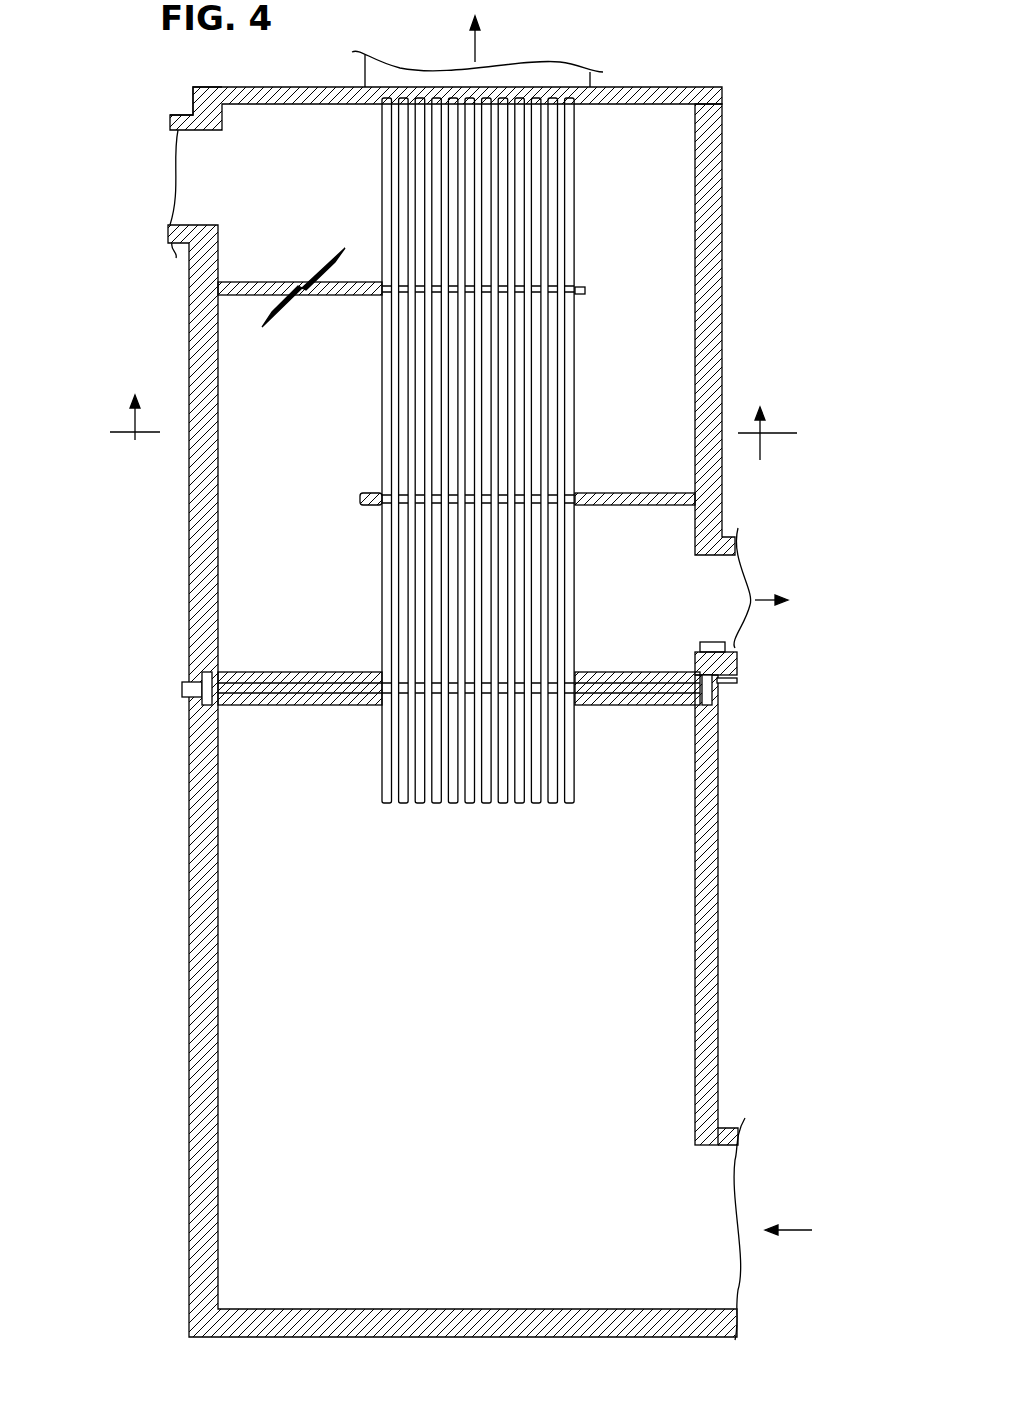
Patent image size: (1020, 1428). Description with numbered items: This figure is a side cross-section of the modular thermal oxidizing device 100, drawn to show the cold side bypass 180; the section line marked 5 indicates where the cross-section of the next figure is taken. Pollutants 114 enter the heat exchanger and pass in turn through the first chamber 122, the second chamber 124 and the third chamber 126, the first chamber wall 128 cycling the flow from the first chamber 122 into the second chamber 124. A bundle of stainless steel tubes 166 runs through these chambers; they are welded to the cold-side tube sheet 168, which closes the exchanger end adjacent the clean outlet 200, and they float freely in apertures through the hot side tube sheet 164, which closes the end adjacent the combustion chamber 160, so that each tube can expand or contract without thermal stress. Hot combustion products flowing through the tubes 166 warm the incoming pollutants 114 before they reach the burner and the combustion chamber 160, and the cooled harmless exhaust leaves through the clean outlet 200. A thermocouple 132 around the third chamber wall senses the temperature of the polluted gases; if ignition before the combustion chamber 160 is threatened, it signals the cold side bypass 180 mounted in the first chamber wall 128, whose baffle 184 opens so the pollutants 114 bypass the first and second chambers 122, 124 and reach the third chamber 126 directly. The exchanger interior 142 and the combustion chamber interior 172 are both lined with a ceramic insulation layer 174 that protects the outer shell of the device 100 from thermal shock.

The modular thermal oxidizing device 100 is at (172, 845).
The pollutants 114 is at (158, 185).
The first chamber 122 is at (650, 213).
The second chamber 124 is at (313, 429).
The third chamber 126 is at (643, 607).
The first chamber wall 128 is at (586, 290).
The thermocouple 132 is at (705, 645).
The exchanger interior 142 is at (265, 558).
The combustion chamber 160 is at (498, 1017).
The hot side tube sheet 164 is at (688, 705).
The tubes 166 is at (578, 806).
The cold-side tube sheet 168 is at (418, 808).
The combustion chamber interior 172 is at (277, 1048).
The ceramic insulation layer 174 is at (705, 395).
The cold side bypass 180 is at (286, 256).
The baffle 184 is at (272, 310).
The clean outlet 200 is at (551, 60).
The section line 5- 5 is at (453, 429).